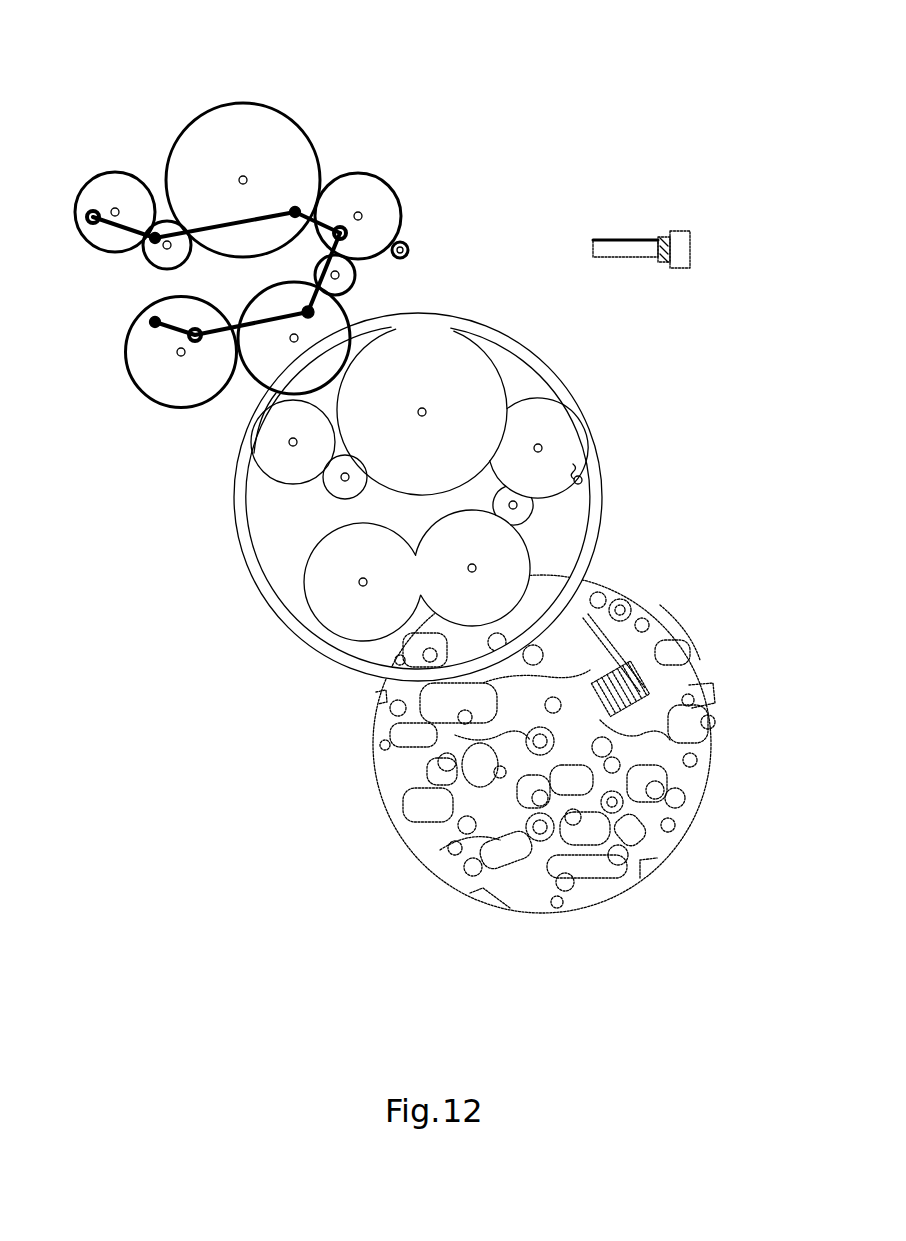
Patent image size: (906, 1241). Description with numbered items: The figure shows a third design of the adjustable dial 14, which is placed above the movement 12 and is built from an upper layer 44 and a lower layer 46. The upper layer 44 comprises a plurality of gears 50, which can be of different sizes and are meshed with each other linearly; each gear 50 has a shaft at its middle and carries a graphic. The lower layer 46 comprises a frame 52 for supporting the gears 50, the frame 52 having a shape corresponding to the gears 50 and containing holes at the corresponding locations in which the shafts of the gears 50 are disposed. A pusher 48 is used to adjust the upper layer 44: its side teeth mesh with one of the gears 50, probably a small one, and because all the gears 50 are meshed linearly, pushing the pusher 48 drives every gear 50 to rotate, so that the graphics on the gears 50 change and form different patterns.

The movement 12 is at (387, 782).
The adjustable dial 14 is at (75, 315).
The upper layer 44 is at (148, 120).
The lower layer 46 is at (585, 427).
The pusher 48 is at (690, 236).
The gears 50 is at (285, 157).
The frame 52 is at (348, 605).